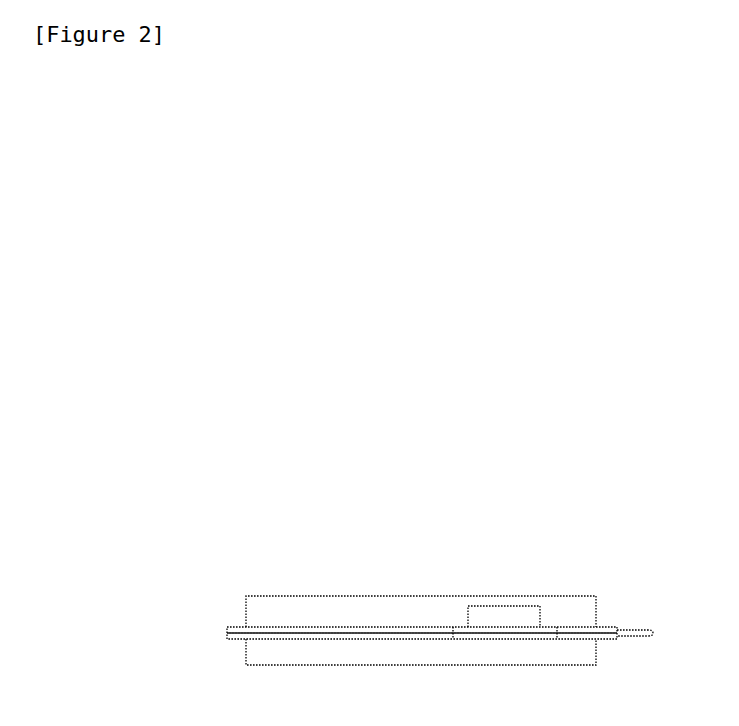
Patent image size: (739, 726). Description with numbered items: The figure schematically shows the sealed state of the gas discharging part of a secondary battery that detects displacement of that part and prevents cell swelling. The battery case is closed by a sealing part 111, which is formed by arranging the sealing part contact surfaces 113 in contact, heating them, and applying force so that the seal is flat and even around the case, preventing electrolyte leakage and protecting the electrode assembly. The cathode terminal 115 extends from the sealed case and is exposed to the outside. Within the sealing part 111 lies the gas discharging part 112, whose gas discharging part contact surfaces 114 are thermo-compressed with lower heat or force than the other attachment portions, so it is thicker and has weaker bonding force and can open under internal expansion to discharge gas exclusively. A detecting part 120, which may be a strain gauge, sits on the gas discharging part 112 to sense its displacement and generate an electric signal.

The sealing part 111 is at (245, 624).
The gas discharging part 112 is at (463, 626).
The sealing part contact surfaces 113 is at (350, 639).
The gas discharging part contact surfaces 114 is at (502, 639).
The cathode terminal 115 is at (653, 633).
The detecting part 120 is at (507, 606).